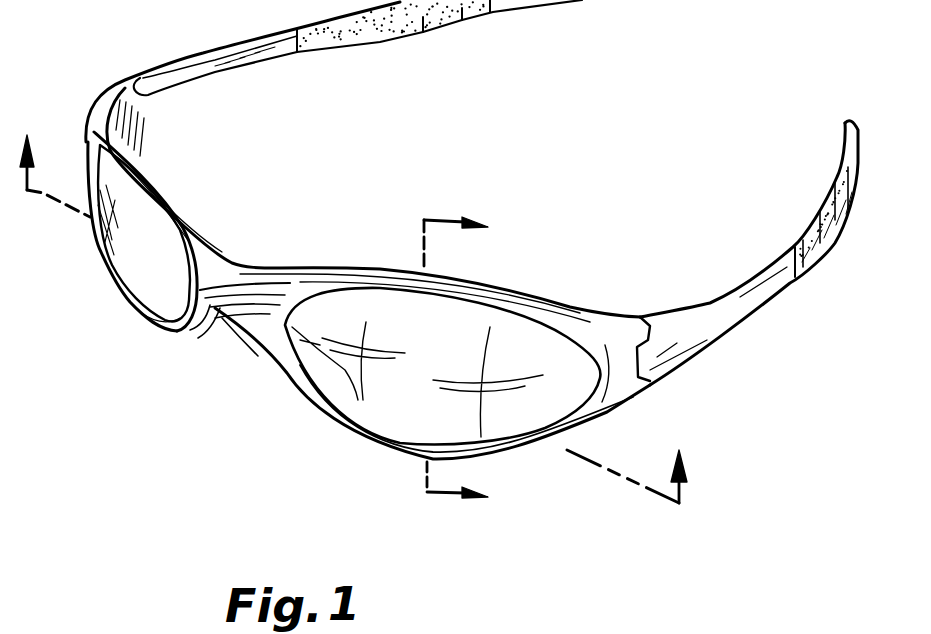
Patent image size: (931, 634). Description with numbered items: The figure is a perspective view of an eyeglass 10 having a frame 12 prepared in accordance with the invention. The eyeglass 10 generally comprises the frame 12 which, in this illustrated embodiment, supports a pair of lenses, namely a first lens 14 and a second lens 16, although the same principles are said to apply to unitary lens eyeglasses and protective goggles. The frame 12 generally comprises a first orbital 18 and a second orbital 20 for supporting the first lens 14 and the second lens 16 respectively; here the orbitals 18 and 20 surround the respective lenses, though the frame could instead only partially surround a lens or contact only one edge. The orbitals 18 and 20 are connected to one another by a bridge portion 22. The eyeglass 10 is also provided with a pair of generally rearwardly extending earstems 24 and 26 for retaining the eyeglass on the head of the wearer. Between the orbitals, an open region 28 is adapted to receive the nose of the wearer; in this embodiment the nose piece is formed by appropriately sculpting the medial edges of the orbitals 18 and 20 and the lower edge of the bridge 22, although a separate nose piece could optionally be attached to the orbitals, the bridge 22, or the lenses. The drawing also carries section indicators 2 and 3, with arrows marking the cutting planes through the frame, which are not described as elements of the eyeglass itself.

The eyeglass 10 is at (124, 461).
The frame 12 is at (204, 219).
The first lens 14 is at (105, 253).
The second lens 16 is at (370, 403).
The first orbital 18 is at (150, 178).
The second orbital 20 is at (368, 271).
The bridge portion 22 is at (231, 318).
The earstem 24 is at (203, 52).
The earstem 26 is at (710, 340).
The open region 28 is at (208, 339).
The section line 2- 2 is at (472, 370).
The section line 3- 3 is at (356, 300).